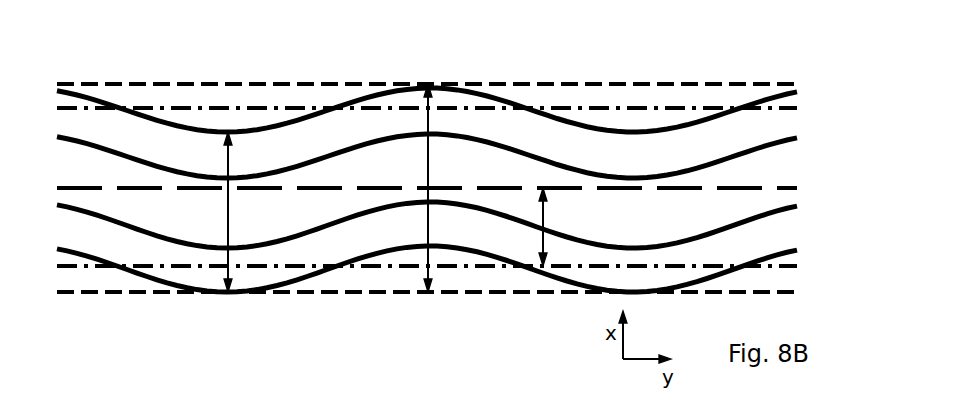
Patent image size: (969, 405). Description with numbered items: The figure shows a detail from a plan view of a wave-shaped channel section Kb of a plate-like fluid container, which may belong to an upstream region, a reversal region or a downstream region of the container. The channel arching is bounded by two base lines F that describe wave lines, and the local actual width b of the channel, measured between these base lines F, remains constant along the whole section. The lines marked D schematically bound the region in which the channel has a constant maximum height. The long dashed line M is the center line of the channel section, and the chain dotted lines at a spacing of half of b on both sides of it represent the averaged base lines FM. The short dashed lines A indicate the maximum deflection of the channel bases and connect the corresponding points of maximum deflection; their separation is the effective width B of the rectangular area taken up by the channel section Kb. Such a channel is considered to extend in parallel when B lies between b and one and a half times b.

The channel section Kb is at (180, 62).
The short dashed line A is at (263, 83).
The base line F is at (516, 103).
The averaged base line FM is at (615, 110).
The maximum height boundary line D is at (795, 130).
The center line M is at (763, 188).
The effective width B is at (417, 188).
The channel width b is at (216, 212).